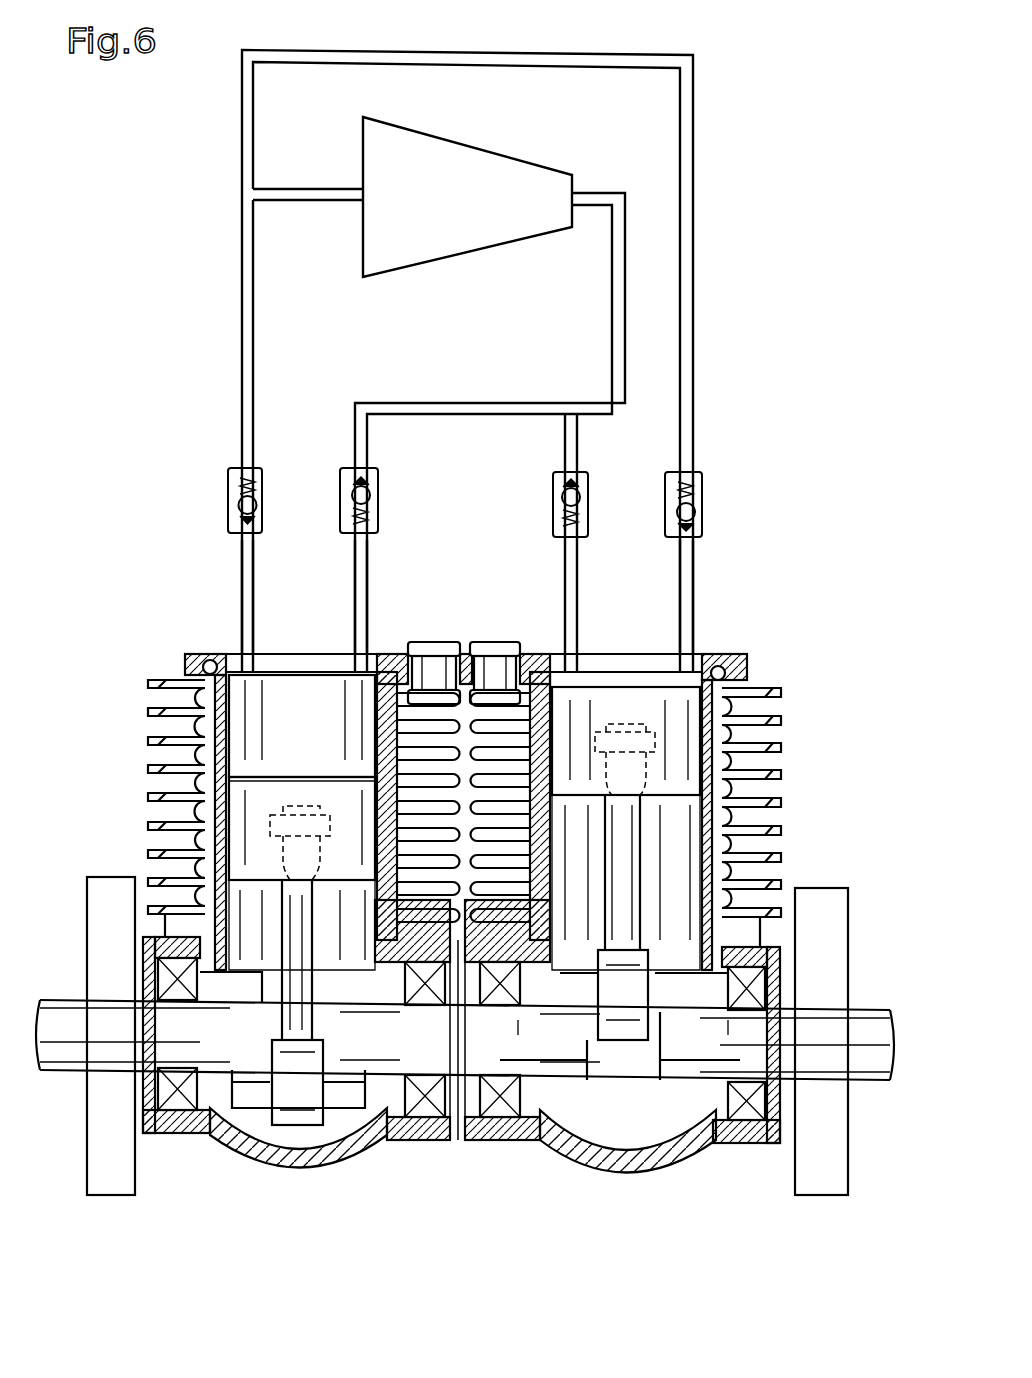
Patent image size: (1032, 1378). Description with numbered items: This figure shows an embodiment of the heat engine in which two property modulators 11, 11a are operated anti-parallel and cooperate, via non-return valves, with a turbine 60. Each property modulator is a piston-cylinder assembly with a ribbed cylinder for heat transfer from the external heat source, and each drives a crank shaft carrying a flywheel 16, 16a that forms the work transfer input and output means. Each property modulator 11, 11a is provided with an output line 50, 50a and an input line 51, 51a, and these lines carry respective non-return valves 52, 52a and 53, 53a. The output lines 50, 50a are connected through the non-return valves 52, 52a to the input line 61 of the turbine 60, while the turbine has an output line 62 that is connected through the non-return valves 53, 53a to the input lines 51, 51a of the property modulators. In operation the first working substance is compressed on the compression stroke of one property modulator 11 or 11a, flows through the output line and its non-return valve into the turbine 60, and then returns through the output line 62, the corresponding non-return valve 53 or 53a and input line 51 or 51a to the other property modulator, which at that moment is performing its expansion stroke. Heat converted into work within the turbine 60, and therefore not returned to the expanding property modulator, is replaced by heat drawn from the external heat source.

The property modulator 11 is at (132, 723).
The property modulator 11a is at (795, 735).
The flywheel 16 is at (100, 1185).
The flywheel 16a is at (823, 1185).
The output line 50 is at (246, 562).
The output line 50a is at (684, 583).
The input line 51 is at (357, 587).
The input line 51a is at (571, 598).
The non-return valve 52 is at (228, 479).
The non-return valve 52a is at (693, 492).
The non-return valve 53 is at (345, 512).
The non-return valve 53a is at (557, 515).
The turbine 60 is at (413, 175).
The input line of the turbine 61 is at (290, 193).
The output line of the turbine 62 is at (618, 268).